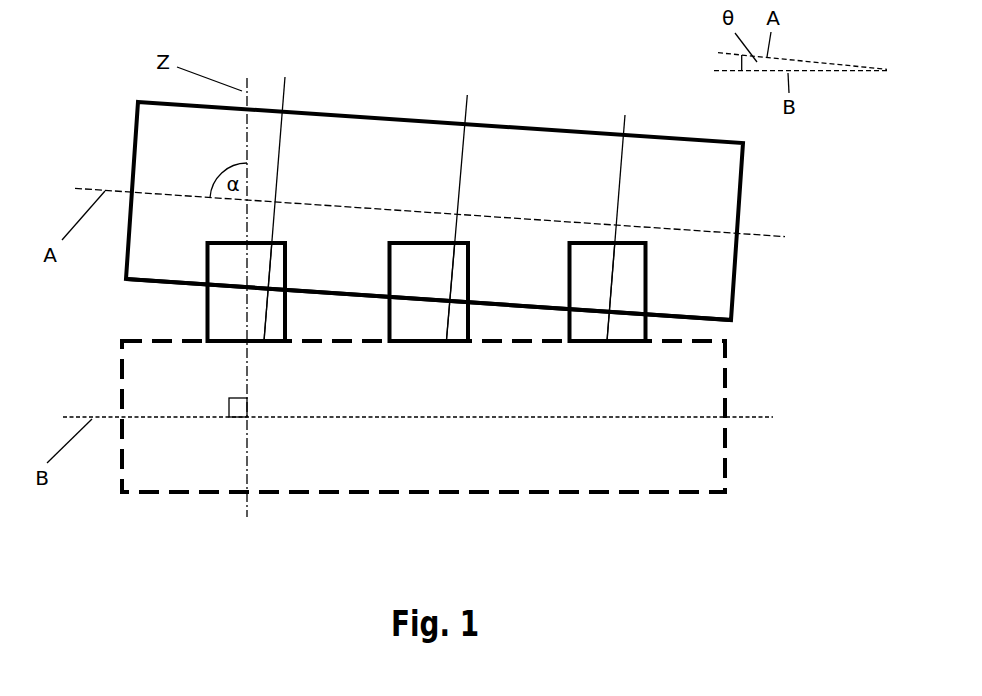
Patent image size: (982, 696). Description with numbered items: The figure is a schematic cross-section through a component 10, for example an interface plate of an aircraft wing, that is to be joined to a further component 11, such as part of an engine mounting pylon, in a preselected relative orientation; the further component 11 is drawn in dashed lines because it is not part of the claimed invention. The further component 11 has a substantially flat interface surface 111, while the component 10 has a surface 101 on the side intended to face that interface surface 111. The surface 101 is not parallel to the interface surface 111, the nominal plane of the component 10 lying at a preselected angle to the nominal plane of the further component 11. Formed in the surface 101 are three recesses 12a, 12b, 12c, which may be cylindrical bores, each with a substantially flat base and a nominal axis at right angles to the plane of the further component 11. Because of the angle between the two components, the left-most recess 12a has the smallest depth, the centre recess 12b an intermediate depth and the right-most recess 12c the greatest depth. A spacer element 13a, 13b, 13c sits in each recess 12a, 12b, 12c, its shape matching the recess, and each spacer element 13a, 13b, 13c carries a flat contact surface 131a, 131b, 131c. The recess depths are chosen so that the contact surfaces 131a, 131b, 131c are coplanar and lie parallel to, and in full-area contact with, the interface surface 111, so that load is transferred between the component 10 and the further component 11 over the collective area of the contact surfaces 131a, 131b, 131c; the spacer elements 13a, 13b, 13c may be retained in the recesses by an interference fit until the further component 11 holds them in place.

The component 10 is at (421, 183).
The surface 101 is at (158, 283).
The further component 11 is at (421, 461).
The interface surface 111 is at (158, 340).
The left-most recess 12a is at (287, 262).
The centre recess 12b is at (470, 273).
The right-most recess 12c is at (648, 282).
The spacer element 13a is at (227, 311).
The spacer element 13b is at (412, 316).
The spacer element 13c is at (587, 324).
The contact surface 131a is at (288, 195).
The contact surface 131b is at (465, 204).
The contact surface 131c is at (627, 214).